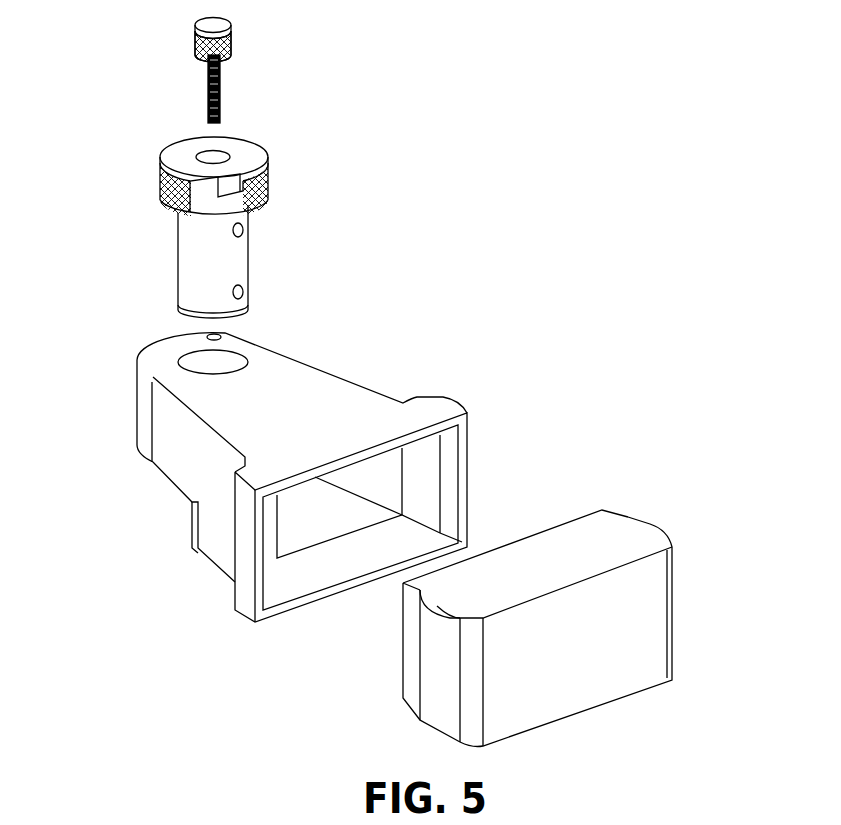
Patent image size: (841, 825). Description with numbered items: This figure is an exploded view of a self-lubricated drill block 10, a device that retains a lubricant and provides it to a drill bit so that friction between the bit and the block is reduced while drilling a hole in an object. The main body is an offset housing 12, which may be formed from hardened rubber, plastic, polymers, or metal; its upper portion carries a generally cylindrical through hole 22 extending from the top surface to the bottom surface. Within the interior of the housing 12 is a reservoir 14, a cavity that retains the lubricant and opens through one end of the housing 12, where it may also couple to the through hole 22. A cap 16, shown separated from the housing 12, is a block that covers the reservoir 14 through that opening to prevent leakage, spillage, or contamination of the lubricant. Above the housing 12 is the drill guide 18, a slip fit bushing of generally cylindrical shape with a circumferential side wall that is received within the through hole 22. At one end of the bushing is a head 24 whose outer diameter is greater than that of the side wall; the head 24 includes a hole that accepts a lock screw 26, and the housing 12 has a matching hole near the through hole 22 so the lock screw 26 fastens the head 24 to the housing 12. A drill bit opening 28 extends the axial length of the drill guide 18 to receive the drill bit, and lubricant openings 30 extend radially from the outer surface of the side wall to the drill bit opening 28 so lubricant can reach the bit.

The self-lubricated drill block 10 is at (533, 175).
The housing 12 is at (126, 423).
The reservoir 14 is at (378, 485).
The cap 16 is at (634, 528).
The drill guide 18 is at (166, 250).
The through hole 22 is at (198, 360).
The head 24 is at (247, 152).
The lock screw 26 is at (221, 93).
The drill bit opening 28 is at (212, 153).
The lubricant opening 30 is at (245, 230).